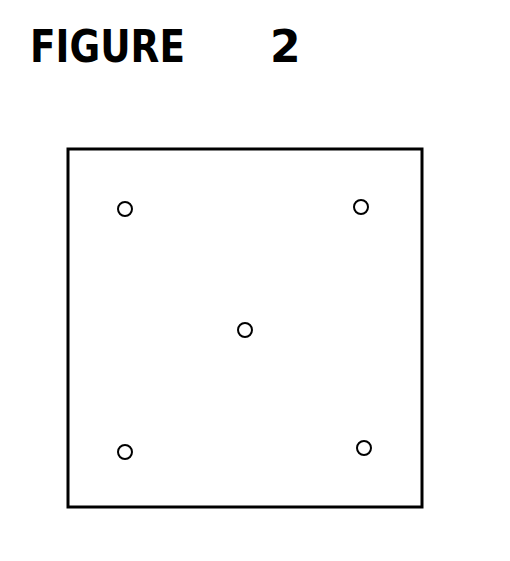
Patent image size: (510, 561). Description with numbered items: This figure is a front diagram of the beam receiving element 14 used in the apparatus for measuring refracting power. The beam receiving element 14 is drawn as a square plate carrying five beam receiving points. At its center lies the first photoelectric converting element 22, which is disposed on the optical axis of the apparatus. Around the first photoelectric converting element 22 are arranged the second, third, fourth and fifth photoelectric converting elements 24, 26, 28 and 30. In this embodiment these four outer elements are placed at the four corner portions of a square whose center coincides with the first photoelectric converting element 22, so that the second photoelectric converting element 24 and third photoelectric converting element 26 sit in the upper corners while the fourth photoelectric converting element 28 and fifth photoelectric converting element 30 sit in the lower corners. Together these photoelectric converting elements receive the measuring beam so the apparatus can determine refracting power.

The beam receiving element 14 is at (393, 144).
The first photoelectric converting element 22 is at (252, 330).
The second photoelectric converting element 24 is at (126, 216).
The third photoelectric converting element 26 is at (361, 214).
The fourth photoelectric converting element 28 is at (363, 441).
The fifth photoelectric converting element 30 is at (126, 445).